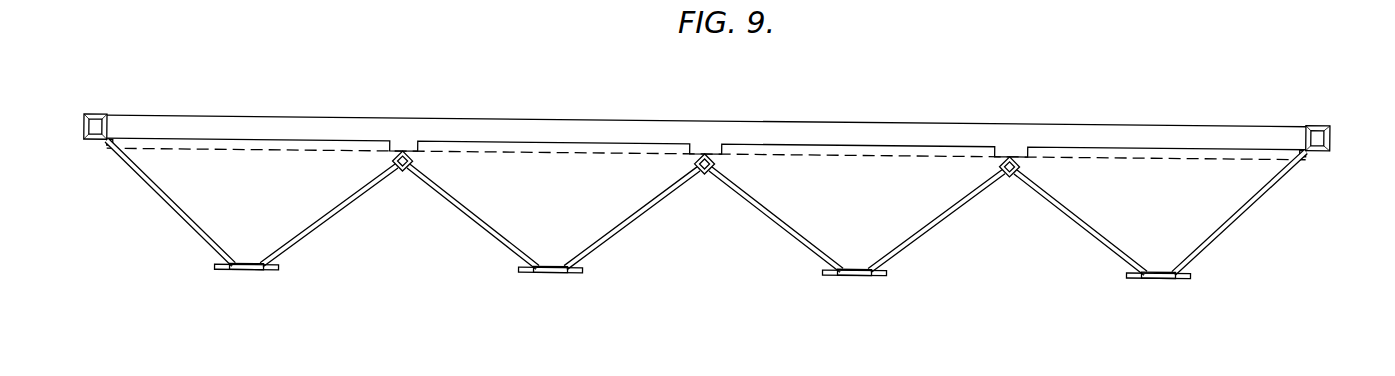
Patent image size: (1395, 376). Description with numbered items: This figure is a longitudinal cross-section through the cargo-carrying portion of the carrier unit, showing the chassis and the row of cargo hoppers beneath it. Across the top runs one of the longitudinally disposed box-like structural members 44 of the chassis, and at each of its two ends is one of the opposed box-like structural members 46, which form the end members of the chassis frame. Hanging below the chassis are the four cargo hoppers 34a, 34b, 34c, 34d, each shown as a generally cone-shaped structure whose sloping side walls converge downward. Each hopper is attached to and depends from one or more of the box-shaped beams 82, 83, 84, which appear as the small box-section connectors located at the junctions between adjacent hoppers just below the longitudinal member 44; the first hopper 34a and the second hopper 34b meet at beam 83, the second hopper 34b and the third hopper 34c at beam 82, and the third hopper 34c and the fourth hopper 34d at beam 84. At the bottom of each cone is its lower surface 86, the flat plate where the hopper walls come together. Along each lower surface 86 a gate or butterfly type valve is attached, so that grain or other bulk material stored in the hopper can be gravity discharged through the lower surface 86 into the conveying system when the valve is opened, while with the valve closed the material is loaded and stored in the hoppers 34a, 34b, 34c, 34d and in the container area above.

The longitudinally disposed box-like structural member 44 is at (763, 126).
The opposed box-like structural member 46 is at (93, 139).
The cargo hopper 34a is at (268, 201).
The cargo hopper 34b is at (565, 203).
The cargo hopper 34c is at (862, 202).
The cargo hopper 34d is at (1181, 203).
The box-shaped beam 82 is at (696, 168).
The box-shaped beam 83 is at (393, 166).
The box-shaped beam 84 is at (1003, 170).
The lower surface 86 is at (248, 268).